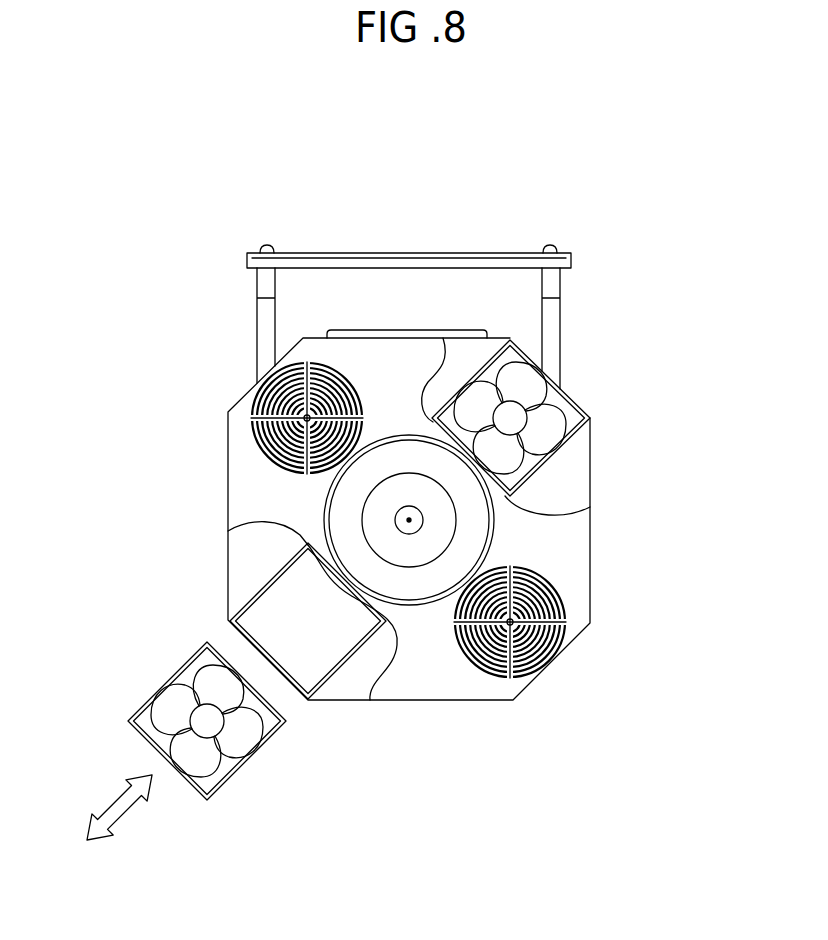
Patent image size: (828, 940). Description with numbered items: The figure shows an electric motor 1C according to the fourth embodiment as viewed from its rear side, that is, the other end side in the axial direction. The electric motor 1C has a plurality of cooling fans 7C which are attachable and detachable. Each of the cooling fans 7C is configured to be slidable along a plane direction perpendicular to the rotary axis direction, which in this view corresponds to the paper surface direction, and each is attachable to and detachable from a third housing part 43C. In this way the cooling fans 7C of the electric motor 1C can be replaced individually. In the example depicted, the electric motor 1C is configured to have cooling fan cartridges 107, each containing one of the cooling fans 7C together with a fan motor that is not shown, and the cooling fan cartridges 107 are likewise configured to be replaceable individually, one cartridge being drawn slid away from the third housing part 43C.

The electric motor 1C is at (550, 147).
The cooling fan 7C is at (563, 383).
The third housing part 43C is at (242, 398).
The cooling fan cartridge 107 is at (187, 797).